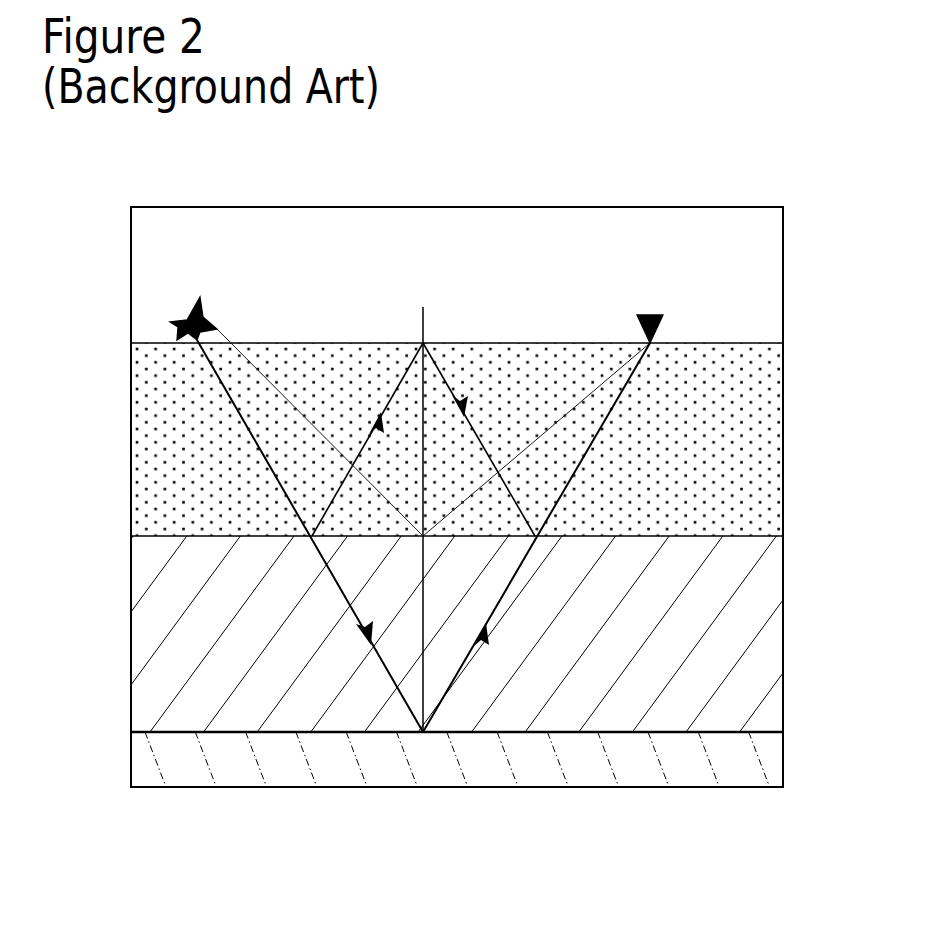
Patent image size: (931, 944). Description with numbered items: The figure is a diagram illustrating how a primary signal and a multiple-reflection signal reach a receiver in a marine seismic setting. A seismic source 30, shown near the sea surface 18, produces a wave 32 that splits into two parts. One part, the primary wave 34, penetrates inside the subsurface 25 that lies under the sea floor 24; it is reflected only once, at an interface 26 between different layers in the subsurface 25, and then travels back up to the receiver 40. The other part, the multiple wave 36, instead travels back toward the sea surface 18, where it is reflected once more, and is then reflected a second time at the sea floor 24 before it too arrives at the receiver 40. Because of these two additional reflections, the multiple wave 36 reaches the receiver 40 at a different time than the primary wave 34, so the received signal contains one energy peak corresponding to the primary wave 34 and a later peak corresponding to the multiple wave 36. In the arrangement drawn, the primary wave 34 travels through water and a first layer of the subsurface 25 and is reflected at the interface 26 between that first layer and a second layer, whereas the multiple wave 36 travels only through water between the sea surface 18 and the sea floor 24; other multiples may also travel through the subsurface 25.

The sea surface 18 is at (750, 341).
The sea floor 24 is at (745, 535).
The subsurface 25 is at (763, 638).
The interface 26 is at (742, 732).
The seismic source 30 is at (170, 323).
The wave 32 is at (262, 462).
The primary wave 34 is at (387, 668).
The multiple wave 36 is at (358, 455).
The receiver 40 is at (663, 322).